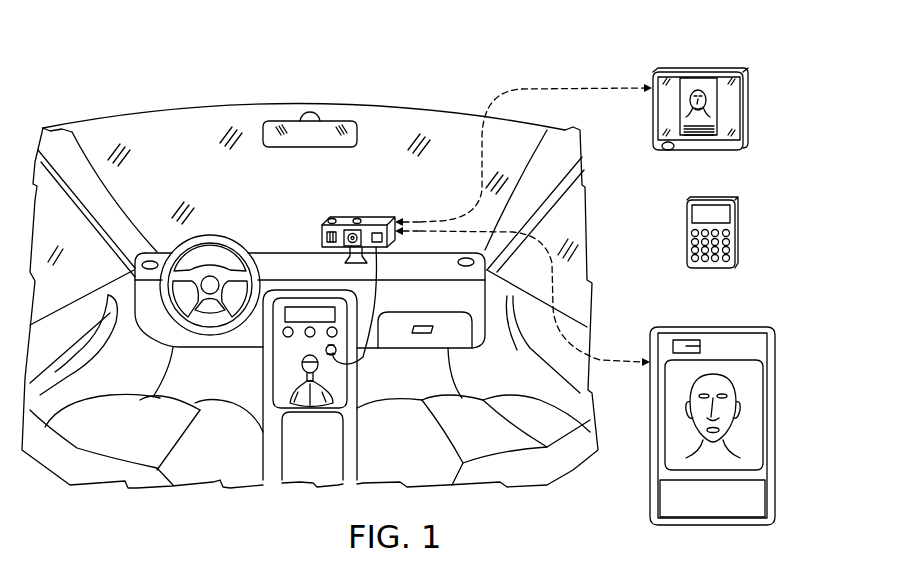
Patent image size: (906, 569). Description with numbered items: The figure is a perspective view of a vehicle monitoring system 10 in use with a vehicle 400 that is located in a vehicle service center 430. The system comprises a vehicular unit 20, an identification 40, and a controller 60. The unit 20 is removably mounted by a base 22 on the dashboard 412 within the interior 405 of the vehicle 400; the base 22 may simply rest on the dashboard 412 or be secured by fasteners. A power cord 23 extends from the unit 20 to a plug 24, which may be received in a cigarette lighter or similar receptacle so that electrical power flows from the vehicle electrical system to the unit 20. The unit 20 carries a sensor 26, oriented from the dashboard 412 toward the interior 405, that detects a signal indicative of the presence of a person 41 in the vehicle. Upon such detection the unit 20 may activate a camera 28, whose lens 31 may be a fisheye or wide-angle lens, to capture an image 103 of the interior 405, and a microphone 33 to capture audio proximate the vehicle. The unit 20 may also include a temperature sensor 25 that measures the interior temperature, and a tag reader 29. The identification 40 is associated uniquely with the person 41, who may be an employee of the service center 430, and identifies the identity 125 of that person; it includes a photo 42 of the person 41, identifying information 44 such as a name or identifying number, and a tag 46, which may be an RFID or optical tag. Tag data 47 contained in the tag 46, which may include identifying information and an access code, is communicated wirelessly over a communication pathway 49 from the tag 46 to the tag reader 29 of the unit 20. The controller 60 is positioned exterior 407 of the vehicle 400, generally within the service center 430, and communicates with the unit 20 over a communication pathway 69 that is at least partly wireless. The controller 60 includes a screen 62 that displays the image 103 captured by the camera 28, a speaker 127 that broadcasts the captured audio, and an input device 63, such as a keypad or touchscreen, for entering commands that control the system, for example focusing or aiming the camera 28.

The vehicle monitoring system 10 is at (565, 28).
The vehicle 400 is at (442, 95).
The vehicle service center 430 is at (100, 60).
The interior 405 is at (148, 175).
The exterior 407 is at (627, 214).
The dashboard 412 is at (277, 247).
The vehicular unit 20 is at (363, 212).
The base 22 is at (347, 263).
The power cord 23 is at (375, 288).
The plug 24 is at (326, 349).
The temperature sensor 25 is at (332, 218).
The sensor 26 is at (328, 234).
The camera 28 is at (377, 233).
The tag reader 29 is at (394, 222).
The lens 31 is at (358, 244).
The microphone 33 is at (357, 218).
The communication pathway 69 is at (612, 86).
The communication pathway 49 is at (624, 358).
The controller 60 is at (741, 56).
The screen 62 is at (730, 84).
The image 103 is at (679, 117).
The identity 125 is at (716, 118).
The speaker 127 is at (668, 151).
The input device 63 is at (750, 230).
The identification 40 is at (736, 310).
The person 41 is at (653, 418).
The photo 42 is at (690, 443).
The identifying information 44 is at (667, 503).
The tag 46 is at (678, 338).
The tag data 47 is at (690, 339).